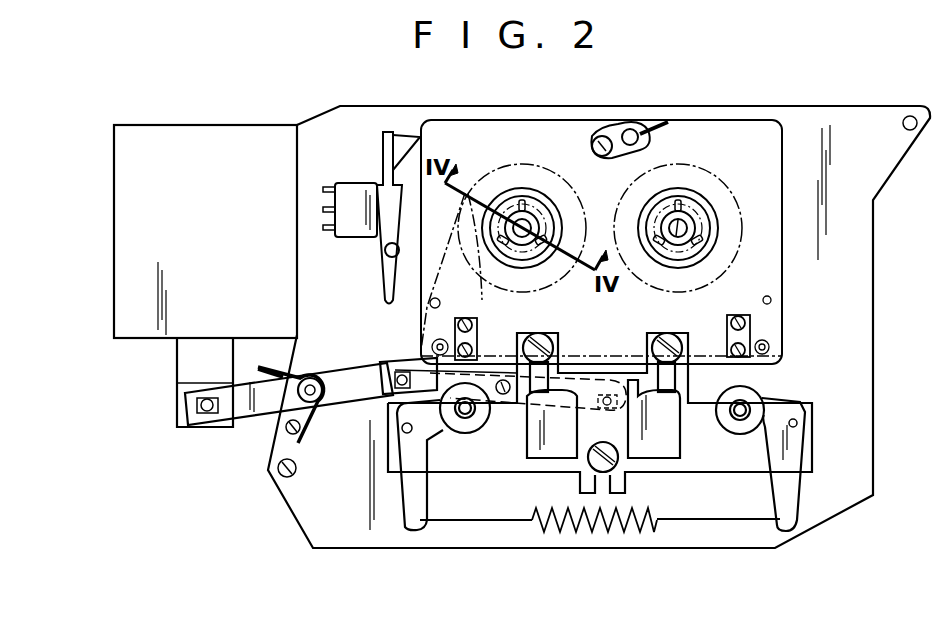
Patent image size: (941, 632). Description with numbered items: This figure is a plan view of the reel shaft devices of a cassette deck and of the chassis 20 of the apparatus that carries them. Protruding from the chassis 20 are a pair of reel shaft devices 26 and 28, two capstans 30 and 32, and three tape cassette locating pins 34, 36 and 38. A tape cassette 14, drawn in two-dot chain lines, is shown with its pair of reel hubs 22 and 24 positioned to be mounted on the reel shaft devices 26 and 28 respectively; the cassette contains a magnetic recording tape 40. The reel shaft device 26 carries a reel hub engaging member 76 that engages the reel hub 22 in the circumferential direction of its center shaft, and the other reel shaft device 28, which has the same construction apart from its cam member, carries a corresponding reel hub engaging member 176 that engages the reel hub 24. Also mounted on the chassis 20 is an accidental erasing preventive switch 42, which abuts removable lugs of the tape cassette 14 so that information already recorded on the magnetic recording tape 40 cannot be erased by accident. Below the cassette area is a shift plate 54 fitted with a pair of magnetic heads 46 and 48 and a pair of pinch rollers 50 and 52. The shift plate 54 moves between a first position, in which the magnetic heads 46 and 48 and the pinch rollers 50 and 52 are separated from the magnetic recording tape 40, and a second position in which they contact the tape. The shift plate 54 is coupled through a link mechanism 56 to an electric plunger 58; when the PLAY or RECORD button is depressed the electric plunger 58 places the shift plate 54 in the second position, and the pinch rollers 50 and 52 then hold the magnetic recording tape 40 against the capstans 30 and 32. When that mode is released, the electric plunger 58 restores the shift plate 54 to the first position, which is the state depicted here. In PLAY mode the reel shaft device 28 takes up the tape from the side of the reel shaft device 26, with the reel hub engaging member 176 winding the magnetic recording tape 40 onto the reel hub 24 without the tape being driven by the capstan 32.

The tape cassette 14 is at (753, 117).
The chassis 20 is at (853, 398).
The reel hub 22 is at (527, 203).
The reel hub 24 is at (677, 200).
The reel shaft device 26 is at (497, 190).
The reel shaft device 28 is at (708, 190).
The capstan 30 is at (472, 350).
The capstan 32 is at (730, 348).
The tape cassette locating pin 34 is at (598, 152).
The tape cassette locating pin 36 is at (462, 318).
The tape cassette locating pin 38 is at (740, 315).
The magnetic recording tape 40 is at (452, 232).
The accidental erasing preventive switch 42 is at (362, 240).
The magnetic head 46 is at (553, 450).
The magnetic head 48 is at (666, 440).
The pinch roller 50 is at (470, 432).
The pinch roller 52 is at (752, 400).
The shift plate 54 is at (809, 460).
The link mechanism 56 is at (345, 400).
The electric plunger 58 is at (206, 135).
The reel hub engaging member 76 is at (520, 252).
The reel hub engaging member 176 is at (670, 254).